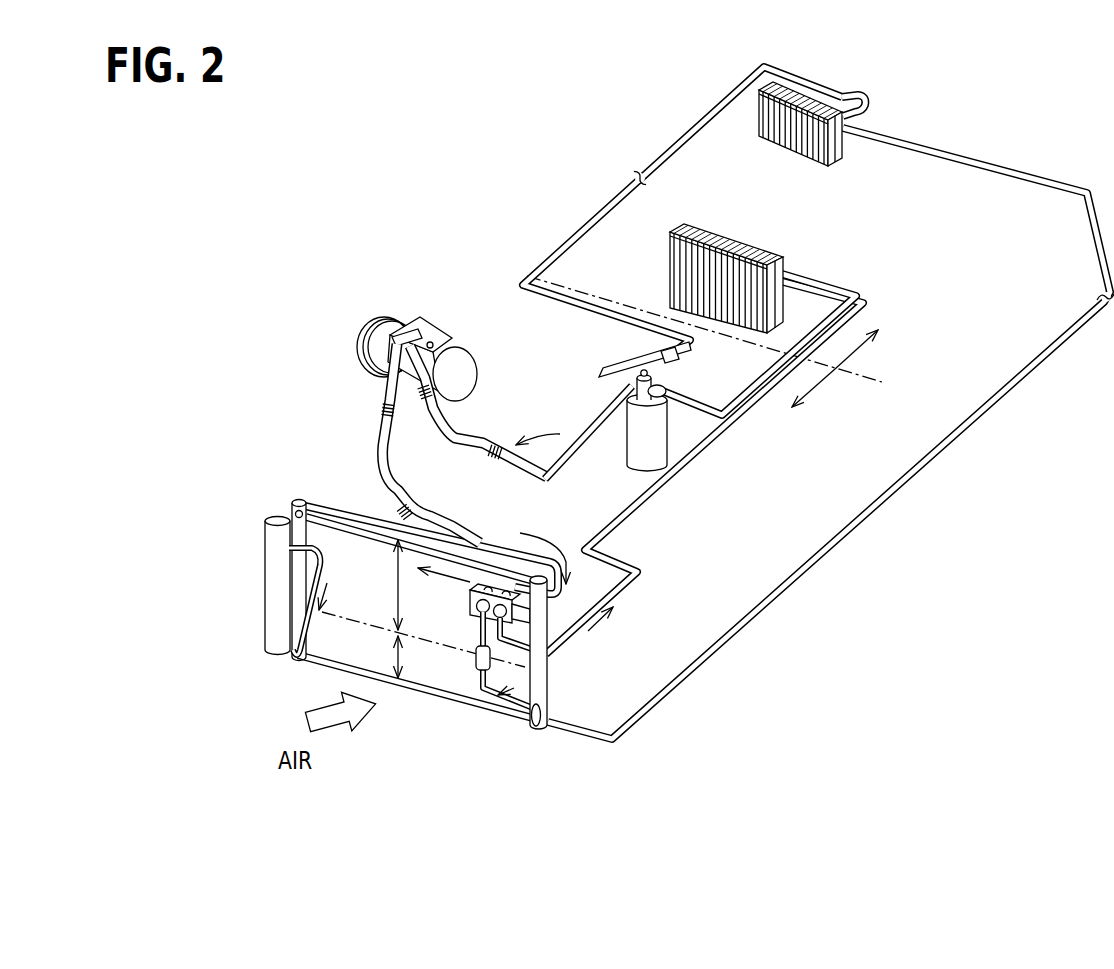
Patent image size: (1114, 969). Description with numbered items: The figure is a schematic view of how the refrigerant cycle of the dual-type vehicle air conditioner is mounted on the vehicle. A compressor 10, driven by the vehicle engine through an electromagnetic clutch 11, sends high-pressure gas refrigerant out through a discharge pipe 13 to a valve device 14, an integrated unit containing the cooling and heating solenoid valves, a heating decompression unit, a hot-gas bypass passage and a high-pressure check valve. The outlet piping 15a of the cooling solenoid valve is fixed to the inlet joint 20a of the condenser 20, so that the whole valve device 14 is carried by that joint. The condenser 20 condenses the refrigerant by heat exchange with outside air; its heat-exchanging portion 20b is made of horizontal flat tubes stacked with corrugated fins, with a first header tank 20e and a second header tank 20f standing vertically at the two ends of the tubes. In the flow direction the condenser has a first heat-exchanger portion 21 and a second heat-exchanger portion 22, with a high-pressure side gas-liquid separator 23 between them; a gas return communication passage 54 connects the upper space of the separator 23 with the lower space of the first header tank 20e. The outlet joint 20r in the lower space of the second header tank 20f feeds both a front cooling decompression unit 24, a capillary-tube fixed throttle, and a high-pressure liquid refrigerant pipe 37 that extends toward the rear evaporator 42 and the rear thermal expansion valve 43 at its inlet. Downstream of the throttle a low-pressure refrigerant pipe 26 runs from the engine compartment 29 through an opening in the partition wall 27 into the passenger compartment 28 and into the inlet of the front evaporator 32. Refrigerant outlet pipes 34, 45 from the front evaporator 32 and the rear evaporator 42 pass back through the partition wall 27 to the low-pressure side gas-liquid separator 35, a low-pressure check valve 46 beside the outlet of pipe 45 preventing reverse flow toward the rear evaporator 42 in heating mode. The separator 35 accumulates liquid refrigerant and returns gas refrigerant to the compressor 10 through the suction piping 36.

The compressor 10 is at (461, 348).
The electromagnetic clutch 11 is at (380, 317).
The discharge pipe 13 is at (386, 412).
The valve device 14 is at (468, 607).
The outlet piping 15a is at (333, 517).
The condenser 20 is at (318, 497).
The inlet joint 20a is at (295, 514).
The heat-exchanging portion 20b is at (363, 572).
The first header tank 20e is at (297, 610).
The second header tank 20f is at (551, 701).
The outlet joint 20r is at (540, 728).
The first heat-exchanger portion 21 is at (413, 585).
The second heat-exchanger portion 22 is at (413, 657).
The high-pressure side gas-liquid separator 23 is at (277, 590).
The front cooling decompression unit 24 is at (473, 658).
The low-pressure refrigerant pipe 26 is at (683, 467).
The partition wall 27 is at (855, 378).
The passenger compartment 28 is at (866, 335).
The engine compartment 29 is at (805, 402).
The front evaporator 32 is at (745, 235).
The refrigerant outlet pipe 34 is at (760, 364).
The low-pressure side gas-liquid separator 35 is at (631, 460).
The suction piping 36 is at (590, 424).
The high-pressure liquid refrigerant pipe 37 is at (870, 514).
The rear evaporator 42 is at (797, 96).
The rear thermal expansion valve 43 is at (858, 96).
The refrigerant outlet pipe 45 is at (713, 107).
The low-pressure check valve 46 is at (622, 374).
The gas return communication passage 54 is at (310, 582).